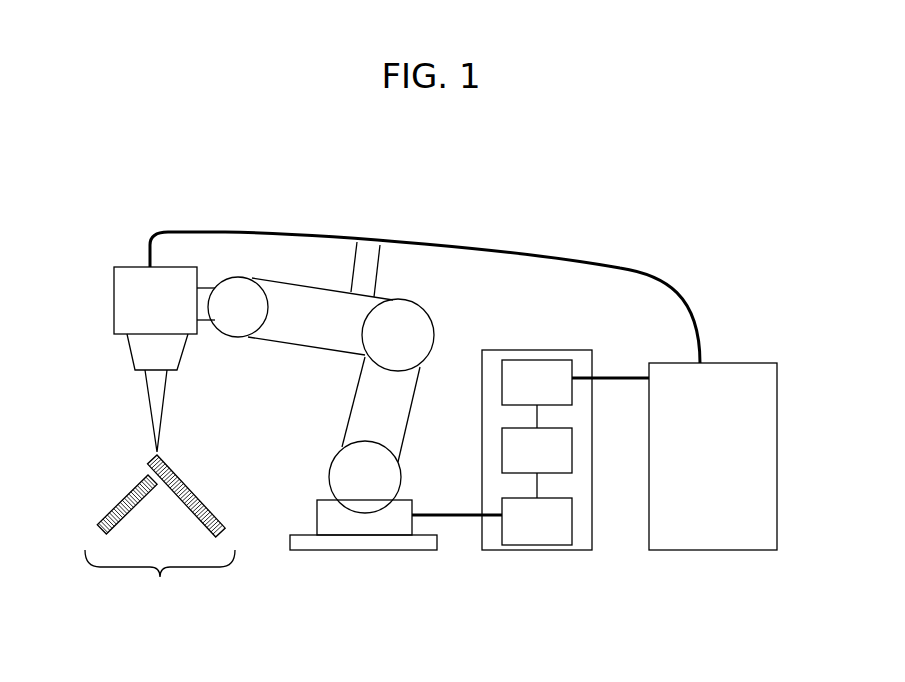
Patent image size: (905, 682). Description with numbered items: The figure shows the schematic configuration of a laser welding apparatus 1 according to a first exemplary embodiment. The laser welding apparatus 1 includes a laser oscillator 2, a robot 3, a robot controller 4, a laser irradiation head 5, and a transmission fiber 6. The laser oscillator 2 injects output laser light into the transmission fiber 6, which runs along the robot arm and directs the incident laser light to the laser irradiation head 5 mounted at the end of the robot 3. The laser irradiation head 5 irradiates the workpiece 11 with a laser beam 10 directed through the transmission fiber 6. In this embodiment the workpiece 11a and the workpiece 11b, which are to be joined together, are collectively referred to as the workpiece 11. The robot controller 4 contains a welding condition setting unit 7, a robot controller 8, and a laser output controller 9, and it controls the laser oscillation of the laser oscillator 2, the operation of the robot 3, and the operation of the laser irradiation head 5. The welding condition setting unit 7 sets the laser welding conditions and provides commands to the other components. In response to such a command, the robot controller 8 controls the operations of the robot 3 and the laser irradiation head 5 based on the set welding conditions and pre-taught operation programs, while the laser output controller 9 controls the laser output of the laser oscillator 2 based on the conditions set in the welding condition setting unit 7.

The laser welding apparatus 1 is at (735, 645).
The laser oscillator 2 is at (718, 513).
The robot 3 is at (305, 560).
The robot controller 4 is at (482, 553).
The laser irradiation head 5 is at (140, 297).
The transmission fiber 6 is at (247, 229).
The welding condition setting unit 7 is at (557, 442).
The robot controller 8 is at (553, 522).
The laser output controller 9 is at (527, 372).
The laser beam 10 is at (148, 390).
The workpiece 11 is at (160, 579).
The workpiece 11a is at (193, 493).
The workpiece 11b is at (127, 493).